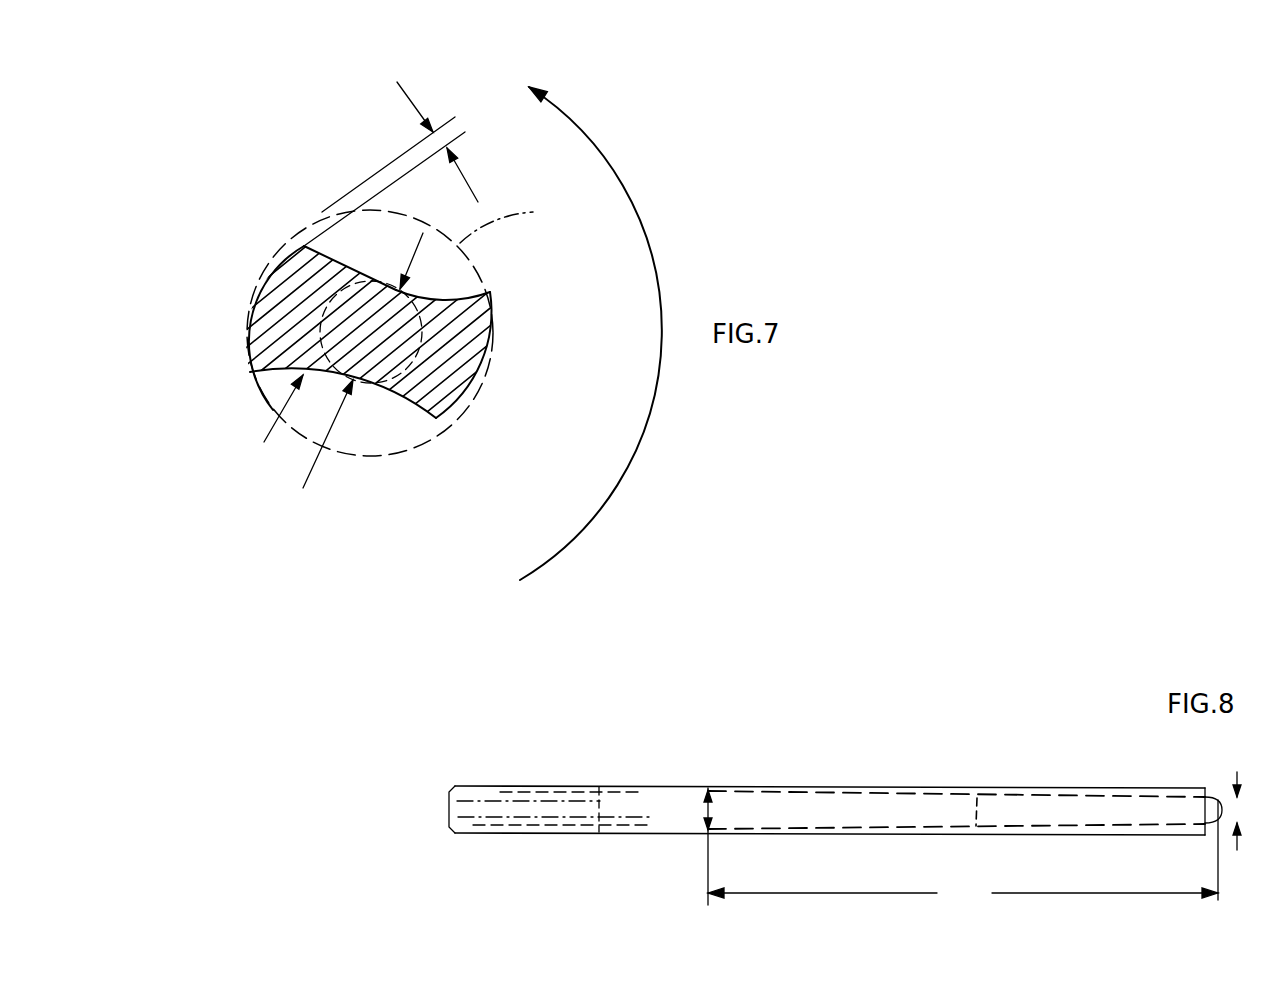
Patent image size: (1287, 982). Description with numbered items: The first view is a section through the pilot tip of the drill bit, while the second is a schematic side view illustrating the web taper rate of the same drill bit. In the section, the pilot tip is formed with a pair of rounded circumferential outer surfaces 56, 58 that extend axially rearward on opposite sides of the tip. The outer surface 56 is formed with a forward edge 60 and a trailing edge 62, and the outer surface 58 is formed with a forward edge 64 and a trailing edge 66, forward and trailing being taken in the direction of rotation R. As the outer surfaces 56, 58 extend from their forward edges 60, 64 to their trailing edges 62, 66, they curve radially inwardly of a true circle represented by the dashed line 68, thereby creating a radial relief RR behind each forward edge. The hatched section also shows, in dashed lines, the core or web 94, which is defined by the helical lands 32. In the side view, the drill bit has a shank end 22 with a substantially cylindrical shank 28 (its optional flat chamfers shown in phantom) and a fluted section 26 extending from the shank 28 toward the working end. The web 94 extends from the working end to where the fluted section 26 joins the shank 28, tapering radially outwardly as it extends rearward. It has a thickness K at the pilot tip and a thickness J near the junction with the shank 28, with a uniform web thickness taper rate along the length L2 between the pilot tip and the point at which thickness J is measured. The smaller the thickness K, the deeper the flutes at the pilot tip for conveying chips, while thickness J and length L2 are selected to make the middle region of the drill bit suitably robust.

In FIG. 8, the shank end 22 is at (534, 781).
In FIG. 8, the fluted section 26 is at (840, 836).
In FIG. 8, the shank 28 is at (572, 817).
In FIG. 7, the helical lands 32 is at (263, 426).
In FIG. 7, the outer surface 56 is at (463, 390).
In FIG. 7, the outer surface 58 is at (287, 262).
In FIG. 7, the forward edge 60 is at (488, 293).
In FIG. 7, the trailing edge 62 is at (436, 418).
In FIG. 7, the forward edge 64 is at (250, 372).
In FIG. 7, the trailing edge 66 is at (303, 245).
In FIG. 7, the true circle 68 is at (518, 220).
In FIG. 7, the web 94 is at (415, 385).
In FIG. 8, the web 94 is at (948, 798).
In FIG. 7, the web thickness at pilot tip K is at (320, 454).
In FIG. 8, the web thickness at pilot tip K is at (1247, 811).
In FIG. 8, the web thickness near shank J is at (708, 818).
In FIG. 7, the direction of rotation R is at (576, 348).
In FIG. 7, the radial relief RR is at (391, 164).
In FIG. 8, the web length L2 is at (963, 854).